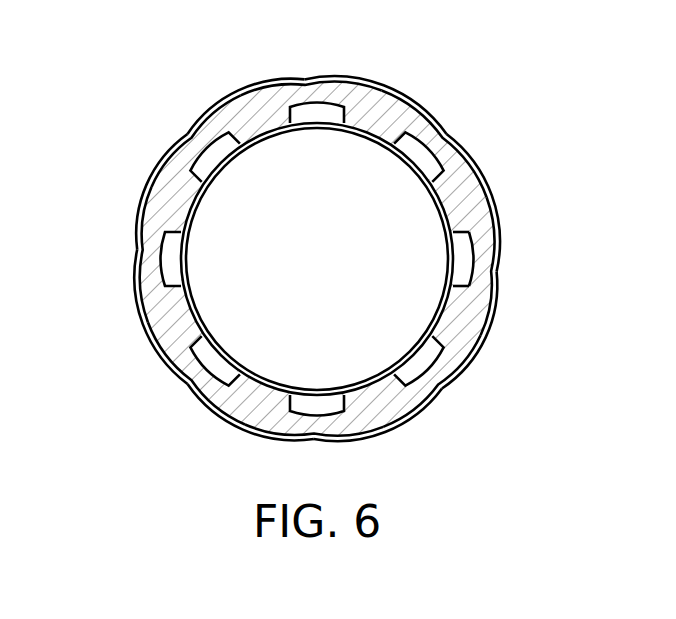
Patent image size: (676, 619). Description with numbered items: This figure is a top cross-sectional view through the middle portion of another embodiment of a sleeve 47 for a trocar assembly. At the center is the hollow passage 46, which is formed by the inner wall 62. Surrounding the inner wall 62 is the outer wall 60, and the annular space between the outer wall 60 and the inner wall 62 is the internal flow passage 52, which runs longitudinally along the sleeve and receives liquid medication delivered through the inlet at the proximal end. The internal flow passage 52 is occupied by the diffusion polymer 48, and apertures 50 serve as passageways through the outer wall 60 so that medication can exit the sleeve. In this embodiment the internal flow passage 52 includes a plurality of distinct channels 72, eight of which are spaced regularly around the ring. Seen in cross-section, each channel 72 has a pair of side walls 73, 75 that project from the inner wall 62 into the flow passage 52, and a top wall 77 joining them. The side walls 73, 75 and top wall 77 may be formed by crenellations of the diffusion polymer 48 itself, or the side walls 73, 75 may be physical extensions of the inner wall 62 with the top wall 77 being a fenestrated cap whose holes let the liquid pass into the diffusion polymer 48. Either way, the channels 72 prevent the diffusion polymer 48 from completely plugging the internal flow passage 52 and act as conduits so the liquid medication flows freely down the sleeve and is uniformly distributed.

The hollow passage 46 is at (331, 274).
The bearing assembly 47 is at (140, 100).
The diffusion polymer 48 is at (150, 205).
The apertures 50 is at (448, 128).
The internal flow passage 52 is at (388, 403).
The outer wall 60 is at (377, 84).
The inner wall 62 is at (283, 384).
The channels 72 is at (217, 142).
The side wall 73 is at (453, 218).
The side wall 75 is at (460, 287).
The top wall 77 is at (474, 263).